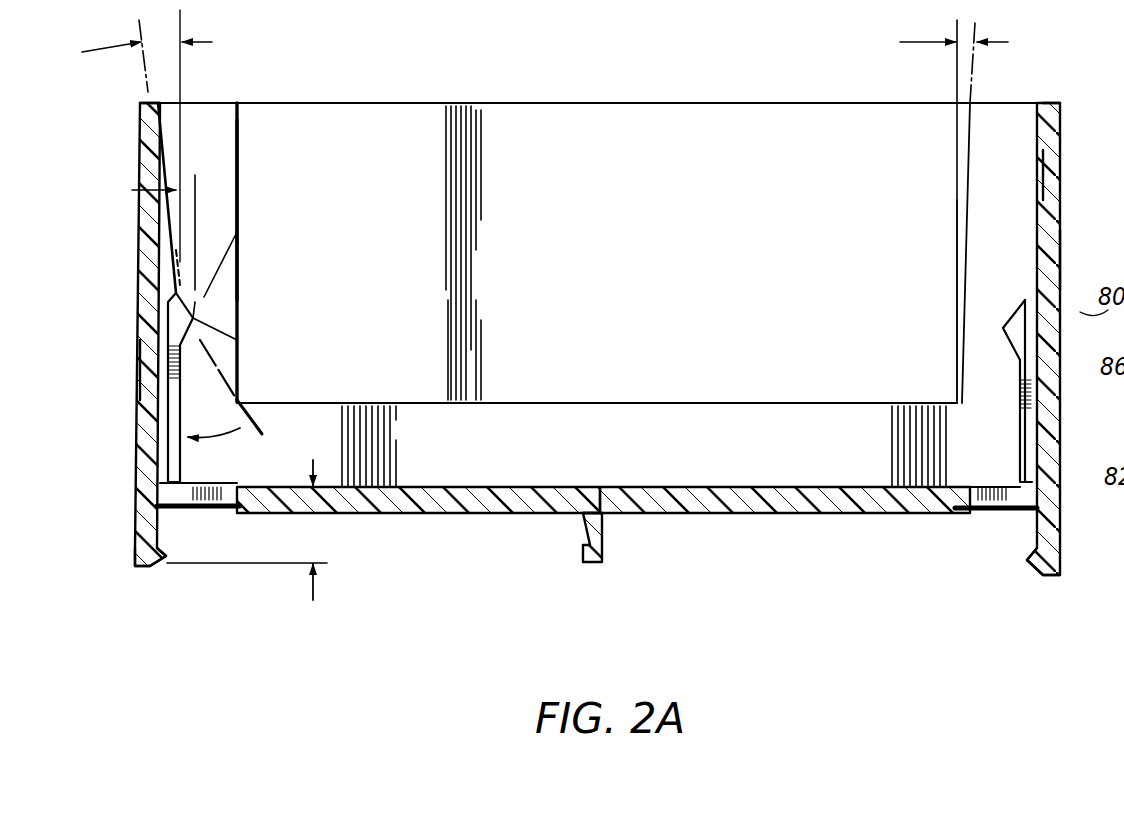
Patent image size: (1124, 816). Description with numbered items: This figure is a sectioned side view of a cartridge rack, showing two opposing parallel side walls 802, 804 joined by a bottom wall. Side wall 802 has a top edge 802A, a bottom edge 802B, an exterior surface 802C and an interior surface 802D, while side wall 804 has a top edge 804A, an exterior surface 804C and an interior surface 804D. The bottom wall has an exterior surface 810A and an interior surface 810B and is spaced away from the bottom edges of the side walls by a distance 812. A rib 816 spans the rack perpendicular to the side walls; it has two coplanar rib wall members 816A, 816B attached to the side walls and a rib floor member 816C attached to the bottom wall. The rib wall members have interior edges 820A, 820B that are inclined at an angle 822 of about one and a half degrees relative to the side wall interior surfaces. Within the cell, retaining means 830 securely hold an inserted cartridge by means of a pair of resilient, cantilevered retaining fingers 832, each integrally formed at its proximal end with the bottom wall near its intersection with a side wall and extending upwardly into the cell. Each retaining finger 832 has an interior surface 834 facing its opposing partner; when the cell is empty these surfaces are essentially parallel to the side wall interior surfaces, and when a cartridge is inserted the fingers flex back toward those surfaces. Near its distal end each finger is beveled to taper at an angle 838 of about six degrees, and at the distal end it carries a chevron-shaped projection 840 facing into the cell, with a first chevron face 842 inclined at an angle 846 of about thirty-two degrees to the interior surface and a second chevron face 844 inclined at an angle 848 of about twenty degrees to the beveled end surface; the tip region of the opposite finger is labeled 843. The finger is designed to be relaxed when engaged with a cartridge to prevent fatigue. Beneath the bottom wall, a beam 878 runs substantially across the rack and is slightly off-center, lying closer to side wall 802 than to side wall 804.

The side wall 802 is at (1062, 190).
The top edge 802A is at (1046, 106).
The bottom edge 802B is at (1036, 575).
The exterior surface 802C is at (1100, 256).
The interior surface 802D is at (1042, 180).
The side wall 804 is at (150, 198).
The top edge 804A is at (140, 100).
The exterior surface 804C is at (136, 365).
The interior surface 804D is at (150, 566).
The exterior surface 810A is at (458, 490).
The interior surface 810B is at (756, 456).
The distance 812 is at (340, 532).
The rib 816 is at (650, 430).
The rib wall member 816A is at (980, 222).
The rib wall member 816B is at (204, 152).
The rib floor member 816C is at (785, 380).
The interior edge 820A is at (969, 115).
The interior edge 820B is at (240, 122).
The angle 822 is at (1022, 30).
The retaining means 830 is at (868, 322).
The retaining finger 832 is at (176, 412).
The interior surface 834 is at (166, 300).
The angle 838 is at (182, 42).
The chevron-shaped projection 840 is at (198, 320).
The first chevron face 842 is at (194, 302).
The right blade tip 843 is at (1003, 322).
The second chevron face 844 is at (200, 344).
The angle 846 is at (225, 440).
The angle 848 is at (281, 238).
The beam 878 is at (600, 558).